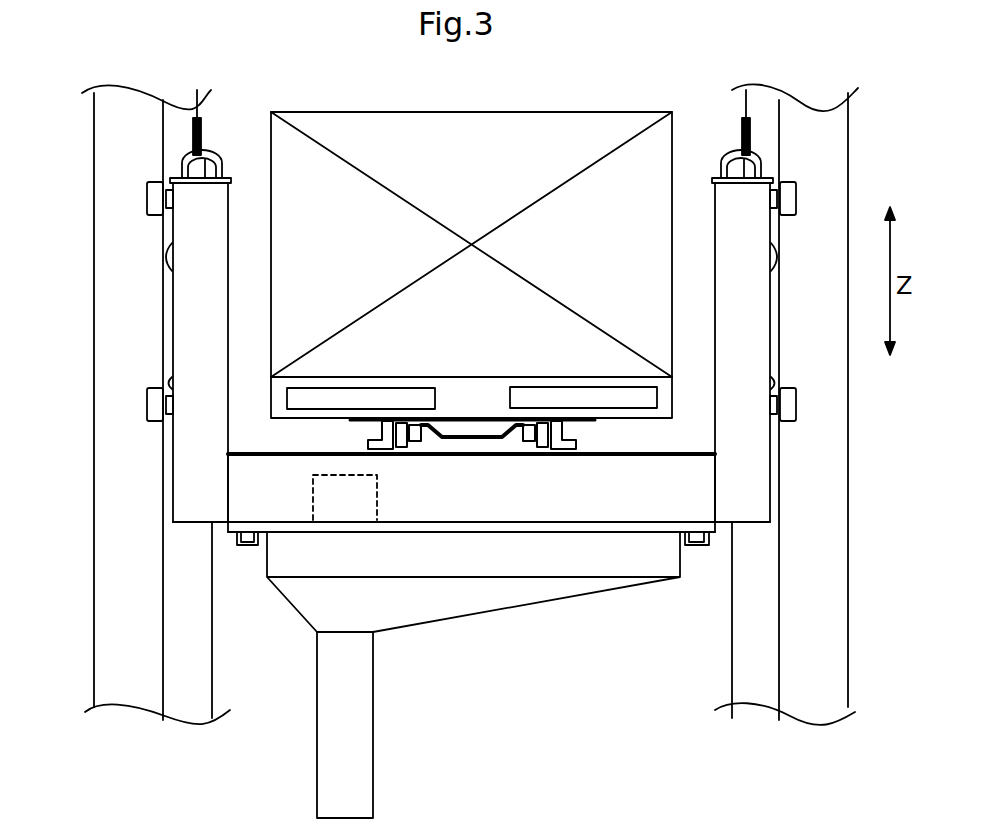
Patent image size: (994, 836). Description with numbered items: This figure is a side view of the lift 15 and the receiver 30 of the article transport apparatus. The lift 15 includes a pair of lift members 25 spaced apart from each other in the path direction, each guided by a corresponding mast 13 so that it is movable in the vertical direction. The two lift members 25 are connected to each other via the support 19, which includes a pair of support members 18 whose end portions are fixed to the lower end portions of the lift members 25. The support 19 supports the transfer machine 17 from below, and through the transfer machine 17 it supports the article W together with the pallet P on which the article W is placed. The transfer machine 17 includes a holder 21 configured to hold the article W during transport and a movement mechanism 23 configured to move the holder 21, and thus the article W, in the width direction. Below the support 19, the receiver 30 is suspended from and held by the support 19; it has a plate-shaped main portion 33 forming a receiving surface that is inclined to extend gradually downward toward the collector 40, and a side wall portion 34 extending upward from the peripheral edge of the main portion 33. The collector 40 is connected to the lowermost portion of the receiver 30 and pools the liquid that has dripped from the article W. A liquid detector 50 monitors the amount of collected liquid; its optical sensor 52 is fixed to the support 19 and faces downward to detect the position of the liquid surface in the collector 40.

The mast 13 is at (108, 213).
The lift 15 is at (708, 80).
The transfer machine 17 is at (657, 440).
The support member 18 is at (400, 450).
The support 19 is at (214, 495).
The holder 21 is at (345, 424).
The movement mechanism 23 is at (493, 441).
The lift member 25 is at (208, 228).
The receiver 30 is at (473, 675).
The main portion 33 is at (560, 590).
The side wall portion 34 is at (648, 545).
The collector 40 is at (399, 736).
The liquid detector 50 is at (432, 588).
The optical sensor 52 is at (357, 503).
The article W is at (358, 120).
The pallet P is at (665, 400).